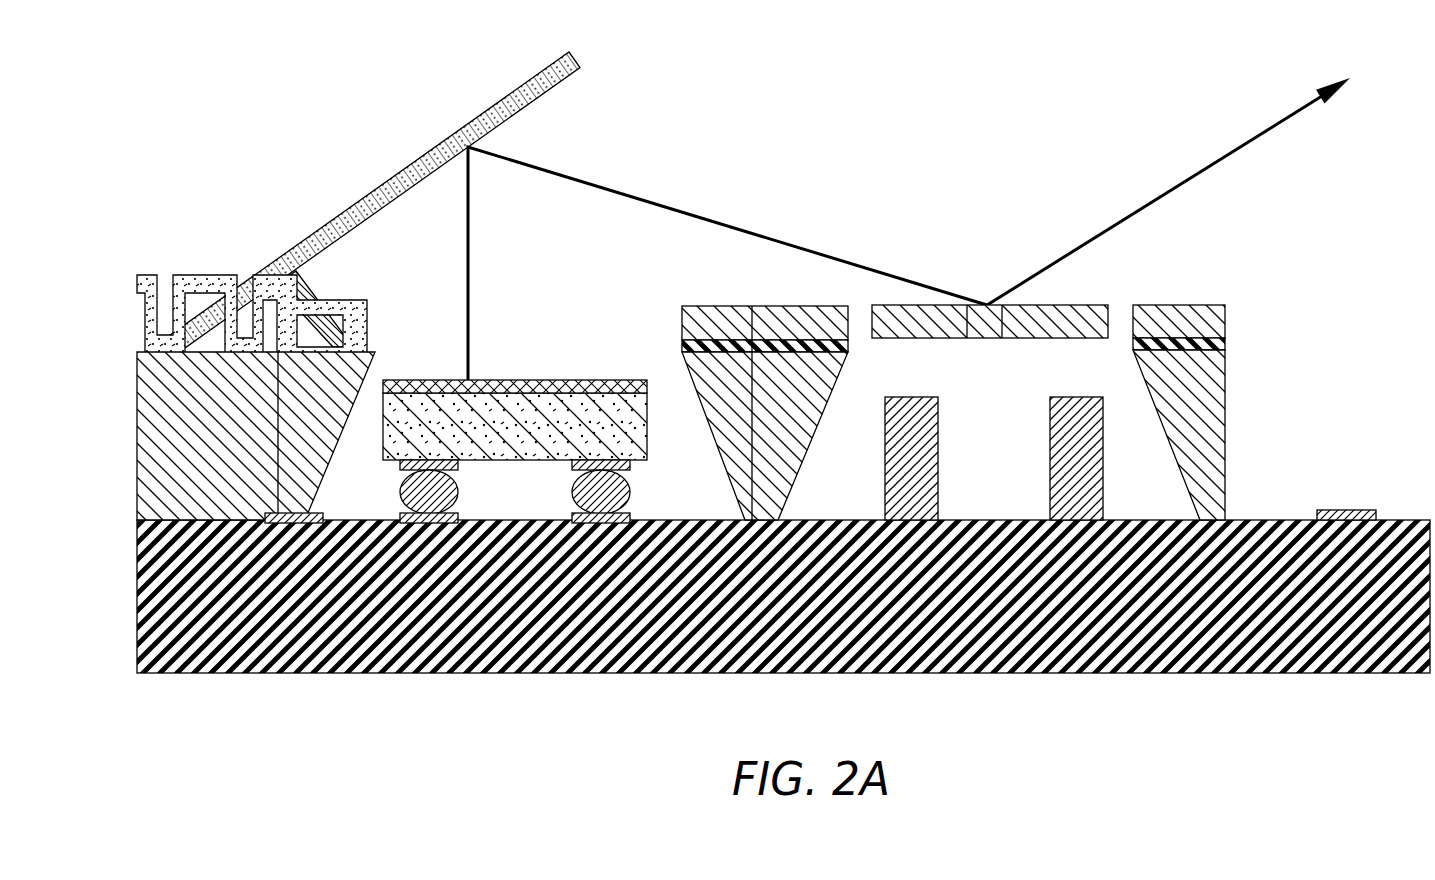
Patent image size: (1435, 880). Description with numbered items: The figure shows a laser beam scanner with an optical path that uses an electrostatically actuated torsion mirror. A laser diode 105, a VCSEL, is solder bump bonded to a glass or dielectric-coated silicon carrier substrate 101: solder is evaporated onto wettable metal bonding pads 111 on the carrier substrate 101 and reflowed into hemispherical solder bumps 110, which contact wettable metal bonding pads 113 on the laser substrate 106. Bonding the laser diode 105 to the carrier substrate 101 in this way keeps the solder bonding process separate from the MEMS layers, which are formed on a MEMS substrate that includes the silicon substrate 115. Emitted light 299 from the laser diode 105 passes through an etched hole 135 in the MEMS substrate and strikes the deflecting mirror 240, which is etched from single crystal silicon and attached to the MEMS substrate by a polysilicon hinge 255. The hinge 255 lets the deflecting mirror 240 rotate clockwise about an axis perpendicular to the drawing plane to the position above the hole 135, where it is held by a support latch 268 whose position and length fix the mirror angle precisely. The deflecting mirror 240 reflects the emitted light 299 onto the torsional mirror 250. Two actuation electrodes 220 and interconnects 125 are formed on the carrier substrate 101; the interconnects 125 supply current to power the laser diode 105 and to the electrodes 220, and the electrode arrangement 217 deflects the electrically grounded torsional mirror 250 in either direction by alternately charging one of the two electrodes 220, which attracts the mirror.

The carrier substrate 101 is at (828, 675).
The laser diode 105 is at (505, 407).
The laser substrate 106 is at (648, 418).
The solder bumps 110 is at (629, 494).
The wettable metal bonding pads 111 is at (565, 512).
The wettable metal bonding pads 113 is at (400, 465).
The silicon substrate 115 is at (138, 381).
The interconnects 125 is at (1343, 508).
The hole 135 is at (522, 388).
The electrode structure 217 is at (994, 434).
The actuation electrodes 220 is at (1050, 487).
The deflecting mirror 240 is at (373, 183).
The torsional mirror 250 is at (1073, 305).
The polysilicon hinge 255 is at (203, 274).
The support latch 268 is at (310, 277).
The emitted light 299 is at (470, 274).